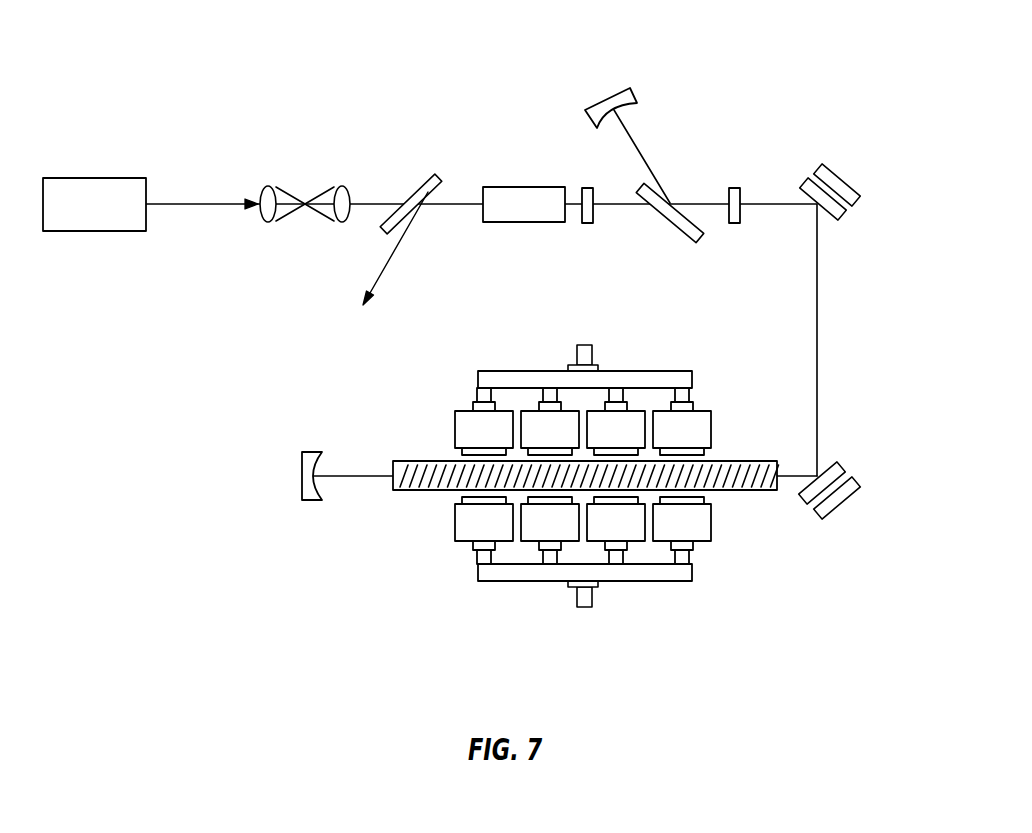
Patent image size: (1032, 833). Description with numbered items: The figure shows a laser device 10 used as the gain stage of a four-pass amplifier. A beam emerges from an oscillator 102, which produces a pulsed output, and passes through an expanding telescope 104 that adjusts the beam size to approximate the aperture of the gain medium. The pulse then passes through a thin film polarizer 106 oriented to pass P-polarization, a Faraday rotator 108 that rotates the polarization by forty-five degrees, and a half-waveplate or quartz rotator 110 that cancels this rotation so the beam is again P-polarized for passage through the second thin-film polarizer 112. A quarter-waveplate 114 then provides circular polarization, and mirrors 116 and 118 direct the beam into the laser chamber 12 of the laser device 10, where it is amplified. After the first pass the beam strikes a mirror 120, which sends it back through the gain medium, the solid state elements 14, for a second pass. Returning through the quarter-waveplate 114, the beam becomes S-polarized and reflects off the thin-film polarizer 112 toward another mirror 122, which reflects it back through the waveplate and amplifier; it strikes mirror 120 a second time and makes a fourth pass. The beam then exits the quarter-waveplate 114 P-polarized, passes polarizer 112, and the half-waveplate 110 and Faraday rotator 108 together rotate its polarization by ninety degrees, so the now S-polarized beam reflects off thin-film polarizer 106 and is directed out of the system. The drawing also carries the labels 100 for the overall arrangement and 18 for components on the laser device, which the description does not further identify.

The laser device 10 is at (593, 479).
The laser chamber 12 is at (579, 472).
The solid state elements 14 is at (583, 494).
The diode laser arrays 18 is at (707, 427).
The laser system 100 is at (816, 58).
The oscillator 102 is at (97, 178).
The expanding telescope 104 is at (268, 187).
The thin film polarizer 106 is at (428, 183).
The Faraday rotator 108 is at (523, 223).
The half-waveplate or 45 degree quartz rotator 110 is at (588, 223).
The second thin-film polarizer 112 is at (693, 239).
The quarter-waveplate 114 is at (734, 188).
The mirror 116 is at (817, 165).
The mirror 118 is at (835, 496).
The mirror 120 is at (307, 452).
The mirror 122 is at (630, 88).